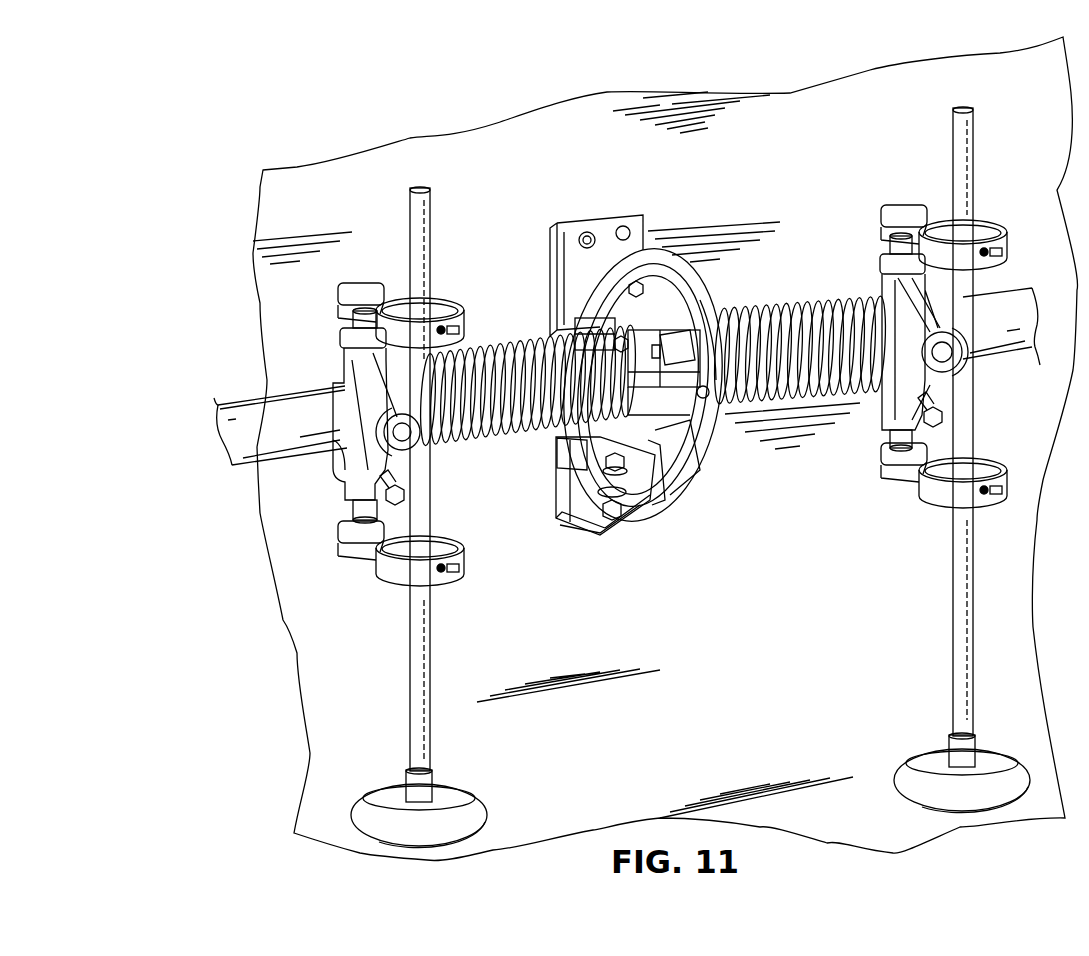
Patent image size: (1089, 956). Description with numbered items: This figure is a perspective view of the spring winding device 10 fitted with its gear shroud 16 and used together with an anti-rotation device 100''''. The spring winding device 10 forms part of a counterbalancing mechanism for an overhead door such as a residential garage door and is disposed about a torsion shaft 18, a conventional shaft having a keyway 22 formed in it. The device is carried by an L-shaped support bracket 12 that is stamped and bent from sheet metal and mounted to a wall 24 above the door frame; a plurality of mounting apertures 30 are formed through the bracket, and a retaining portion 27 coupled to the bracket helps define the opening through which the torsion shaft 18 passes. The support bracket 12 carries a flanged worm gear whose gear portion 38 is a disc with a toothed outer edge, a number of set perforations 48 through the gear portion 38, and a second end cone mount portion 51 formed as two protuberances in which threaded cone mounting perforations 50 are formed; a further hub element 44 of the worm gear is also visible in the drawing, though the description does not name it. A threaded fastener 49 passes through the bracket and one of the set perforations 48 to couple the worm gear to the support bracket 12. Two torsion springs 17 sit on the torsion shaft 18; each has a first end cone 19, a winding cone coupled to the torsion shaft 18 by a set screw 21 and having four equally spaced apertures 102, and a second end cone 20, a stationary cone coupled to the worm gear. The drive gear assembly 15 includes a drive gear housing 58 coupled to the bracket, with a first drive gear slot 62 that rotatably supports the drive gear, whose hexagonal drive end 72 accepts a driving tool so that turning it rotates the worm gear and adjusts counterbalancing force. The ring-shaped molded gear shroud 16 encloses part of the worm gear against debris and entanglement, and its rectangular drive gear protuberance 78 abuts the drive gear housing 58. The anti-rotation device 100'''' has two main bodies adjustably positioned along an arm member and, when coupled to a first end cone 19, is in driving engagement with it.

The spring winding device 10 is at (778, 50).
The support bracket 12 is at (666, 512).
The drive gear assembly 15 is at (596, 548).
The gear shroud 16 is at (652, 256).
The torsion spring 17 is at (498, 445).
The torsion shaft 18 is at (222, 402).
The first end cone 19 is at (335, 462).
The second end cone 20 is at (585, 323).
The set screw 21 is at (404, 496).
The keyway 22 is at (268, 395).
The wall 24 is at (553, 812).
The retaining portion 27 is at (693, 312).
The mounting apertures 30 is at (620, 228).
The gear portion 38 is at (660, 455).
The hub 44 is at (628, 408).
The set perforations 48 is at (642, 290).
The fastener 49 is at (656, 460).
The cone mounting perforations 50 is at (672, 345).
The second end cone mount portion 51 is at (655, 353).
The drive gear housing 58 is at (565, 448).
The first drive gear slot 62 is at (598, 535).
The drive end 72 is at (618, 520).
The drive gear protuberance 78 is at (598, 490).
The anti-rotation device 100'''' is at (673, 477).
The apertures 102 is at (352, 322).